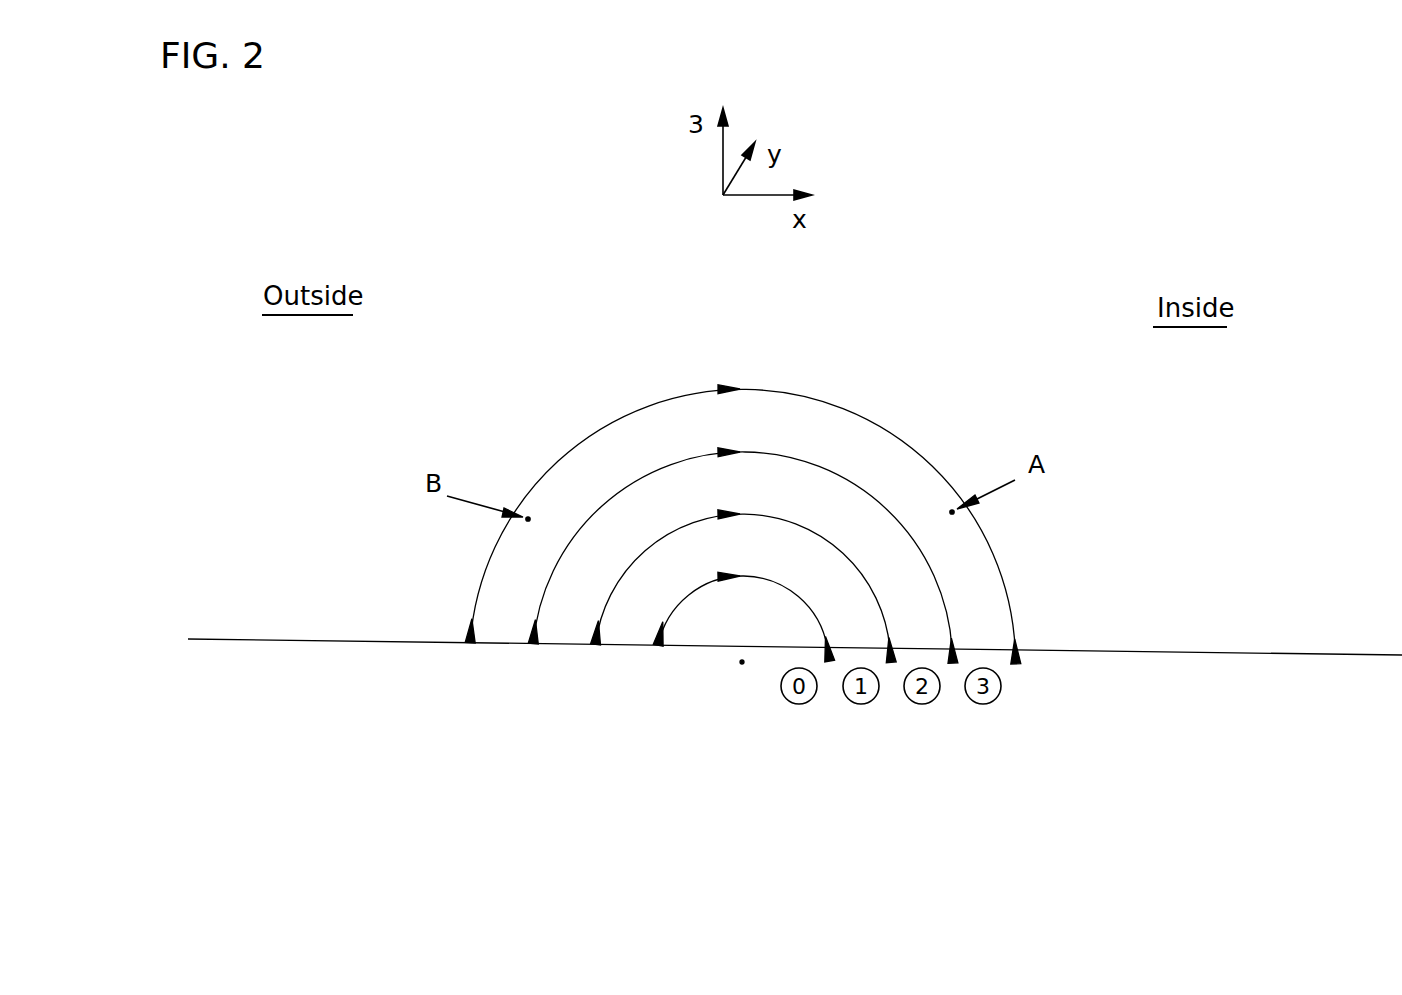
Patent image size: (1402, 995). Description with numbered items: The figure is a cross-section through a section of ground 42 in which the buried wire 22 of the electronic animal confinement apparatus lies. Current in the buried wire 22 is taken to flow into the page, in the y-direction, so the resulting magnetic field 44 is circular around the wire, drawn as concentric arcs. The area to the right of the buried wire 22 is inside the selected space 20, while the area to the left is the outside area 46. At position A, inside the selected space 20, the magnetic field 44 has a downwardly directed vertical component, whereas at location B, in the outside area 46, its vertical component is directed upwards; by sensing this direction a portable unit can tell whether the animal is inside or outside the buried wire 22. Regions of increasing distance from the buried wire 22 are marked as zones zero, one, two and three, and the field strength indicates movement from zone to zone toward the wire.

The selected space 20 is at (1072, 637).
The buried wire 22 is at (742, 662).
The ground 42 is at (451, 661).
The magnetic field 44 is at (600, 351).
The outside area 46 is at (465, 625).